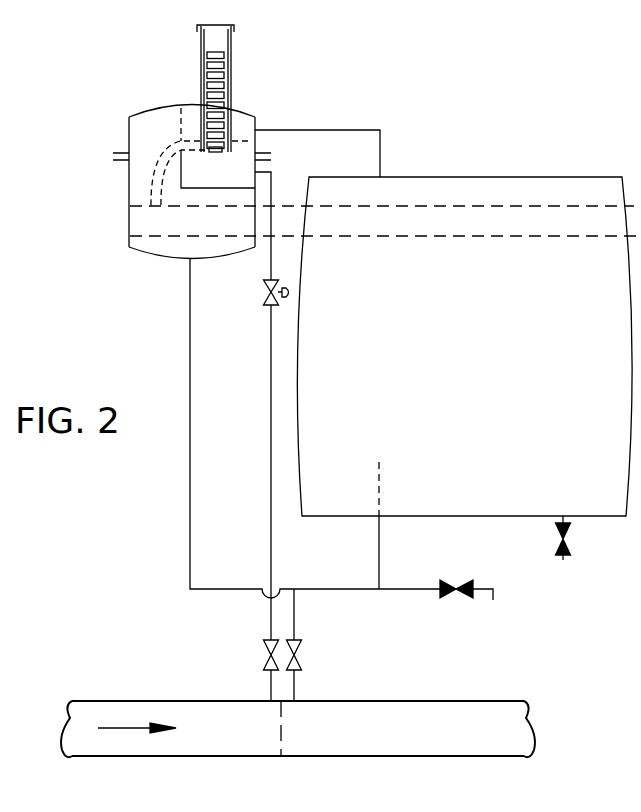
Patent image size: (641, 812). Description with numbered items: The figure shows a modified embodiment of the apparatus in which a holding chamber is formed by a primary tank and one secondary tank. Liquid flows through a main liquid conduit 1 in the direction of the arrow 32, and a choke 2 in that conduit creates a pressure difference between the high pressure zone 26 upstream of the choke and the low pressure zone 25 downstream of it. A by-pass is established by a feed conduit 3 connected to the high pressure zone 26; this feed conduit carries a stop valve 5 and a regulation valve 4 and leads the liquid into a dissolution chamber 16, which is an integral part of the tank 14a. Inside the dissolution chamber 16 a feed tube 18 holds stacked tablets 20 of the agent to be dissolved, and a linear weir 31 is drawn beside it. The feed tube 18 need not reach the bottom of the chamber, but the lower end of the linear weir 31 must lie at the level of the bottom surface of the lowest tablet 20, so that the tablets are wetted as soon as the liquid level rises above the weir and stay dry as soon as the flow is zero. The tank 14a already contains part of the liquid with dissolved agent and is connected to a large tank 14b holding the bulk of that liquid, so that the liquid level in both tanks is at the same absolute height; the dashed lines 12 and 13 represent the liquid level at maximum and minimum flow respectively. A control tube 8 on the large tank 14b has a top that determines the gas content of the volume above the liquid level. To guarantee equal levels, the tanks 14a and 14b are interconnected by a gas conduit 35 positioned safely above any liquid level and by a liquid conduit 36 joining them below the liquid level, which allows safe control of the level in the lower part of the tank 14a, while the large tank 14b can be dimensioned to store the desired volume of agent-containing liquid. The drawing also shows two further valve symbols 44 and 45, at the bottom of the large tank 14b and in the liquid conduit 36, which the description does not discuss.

The main liquid conduit 1 is at (122, 766).
The choke 2 is at (282, 728).
The feed conduit 3 is at (271, 494).
The regulation valve 4 is at (263, 290).
The stop valve 5 is at (262, 660).
The control tube 8 is at (380, 491).
The dashed line 12 is at (567, 238).
The dashed line 13 is at (583, 206).
The tank 14a is at (124, 183).
The large tank 14b is at (598, 518).
The dissolution chamber 16 is at (237, 140).
The feed tube 18 is at (229, 62).
The tablets 20 is at (213, 153).
The low pressure zone 25 is at (319, 727).
The high pressure zone 26 is at (239, 727).
The linear weir 31 is at (180, 123).
The arrow 32 is at (137, 720).
The gas conduit 35 is at (325, 131).
The liquid conduit 36 is at (190, 553).
The outlet valve 44 is at (557, 540).
The valve 45 is at (453, 600).